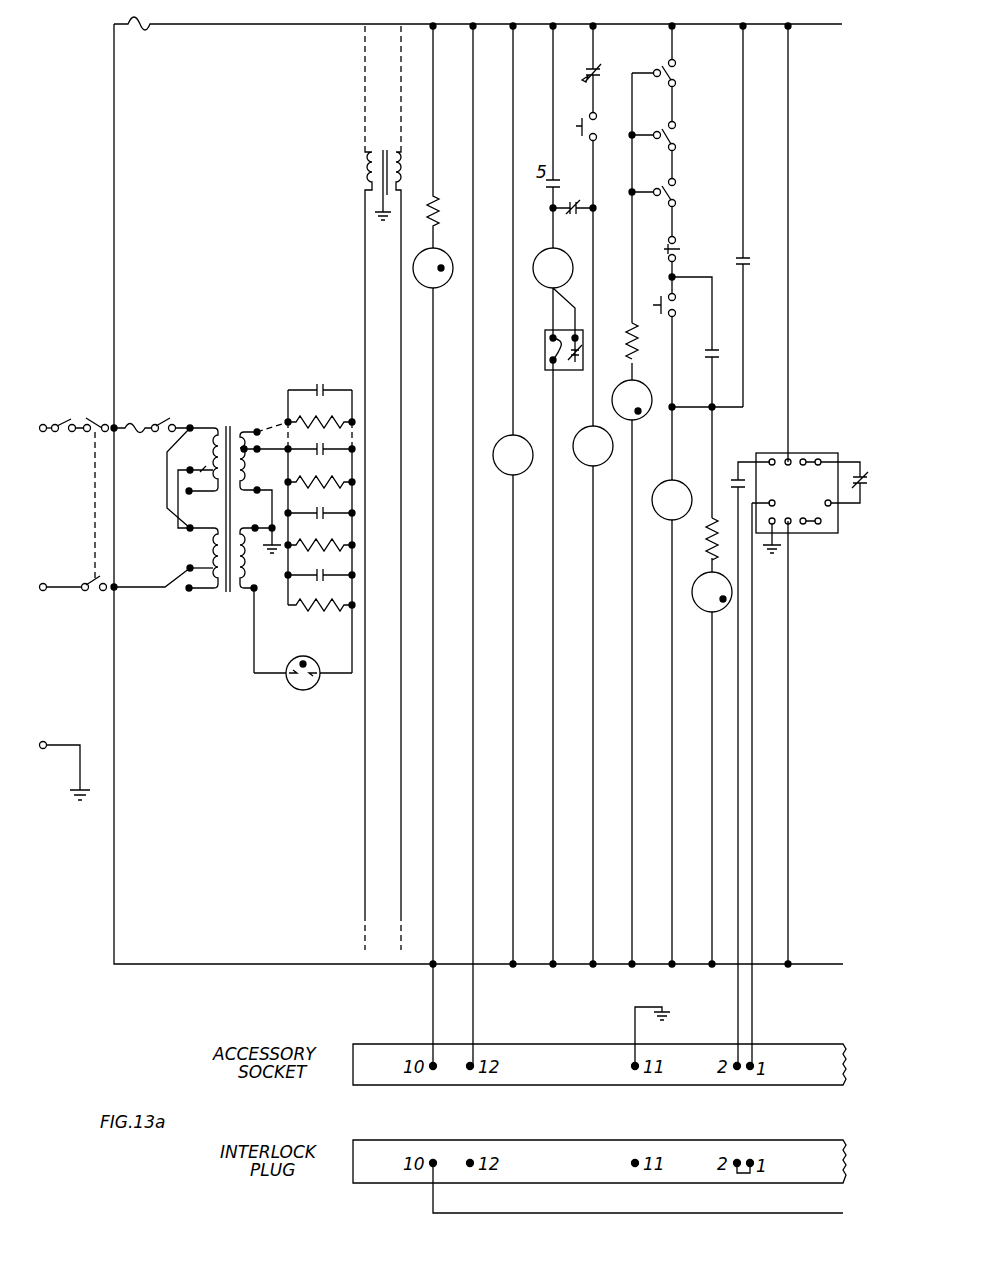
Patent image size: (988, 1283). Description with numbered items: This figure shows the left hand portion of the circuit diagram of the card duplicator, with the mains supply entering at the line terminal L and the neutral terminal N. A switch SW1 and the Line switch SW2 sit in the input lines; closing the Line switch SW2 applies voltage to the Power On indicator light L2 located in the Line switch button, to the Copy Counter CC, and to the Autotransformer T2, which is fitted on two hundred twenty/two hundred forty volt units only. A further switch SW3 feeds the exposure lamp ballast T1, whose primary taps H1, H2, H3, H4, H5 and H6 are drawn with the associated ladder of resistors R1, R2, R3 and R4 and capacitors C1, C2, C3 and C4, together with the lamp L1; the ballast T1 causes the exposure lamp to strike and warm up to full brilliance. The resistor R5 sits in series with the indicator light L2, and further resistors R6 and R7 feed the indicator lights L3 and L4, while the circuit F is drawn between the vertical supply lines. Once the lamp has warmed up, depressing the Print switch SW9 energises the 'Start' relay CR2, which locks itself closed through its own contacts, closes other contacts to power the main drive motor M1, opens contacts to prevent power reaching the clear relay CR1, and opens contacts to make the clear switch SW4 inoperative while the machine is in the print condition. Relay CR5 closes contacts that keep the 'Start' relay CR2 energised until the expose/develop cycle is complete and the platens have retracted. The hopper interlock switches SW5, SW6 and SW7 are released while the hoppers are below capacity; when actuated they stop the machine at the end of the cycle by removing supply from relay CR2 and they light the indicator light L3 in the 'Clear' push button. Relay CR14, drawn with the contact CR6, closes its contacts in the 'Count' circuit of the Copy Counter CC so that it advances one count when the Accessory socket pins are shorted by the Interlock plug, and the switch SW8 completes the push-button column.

The line input terminal L is at (44, 439).
The neutral input terminal N is at (58, 598).
The switch SW1 is at (64, 412).
The Line switch SW2 is at (90, 412).
The switch SW3 is at (156, 413).
The clear switch SW4 is at (576, 139).
The hopper interlock switch SW5 is at (687, 73).
The hopper interlock switch SW6 is at (687, 136).
The hopper interlock switch SW7 is at (687, 193).
The switch SW8 is at (691, 250).
The Print switch SW9 is at (685, 306).
The exposure lamp ballast T1 is at (221, 535).
The Autotransformer T2 is at (383, 488).
The transformer primary tap H1 is at (194, 466).
The transformer primary tap H2 is at (195, 488).
The transformer primary tap H3 is at (195, 501).
The transformer primary tap H4 is at (200, 556).
The transformer primary tap H5 is at (184, 570).
The transformer primary tap H6 is at (194, 599).
The resistor R1 is at (321, 597).
The resistor R2 is at (320, 537).
The resistor R3 is at (320, 474).
The resistor R4 is at (320, 414).
The resistor R5 is at (445, 137).
The resistor R6 is at (619, 341).
The resistor R7 is at (700, 539).
The capacitor C1 is at (320, 567).
The capacitor C2 is at (320, 505).
The capacitor C3 is at (320, 442).
The capacitor C4 is at (320, 380).
The lamp L1 is at (303, 683).
The Power On indicator light L2 is at (444, 252).
The indicator light L3 is at (632, 400).
The lamp L4 is at (712, 592).
The fan motor F is at (513, 495).
The main drive motor M1 is at (538, 246).
The clear relay CR1 is at (593, 446).
The 'Start' relay CR2 is at (638, 280).
The relay CR5 is at (756, 216).
The control relay contact CR6 is at (849, 489).
The relay CR14 is at (743, 753).
The Copy Counter CC is at (806, 452).